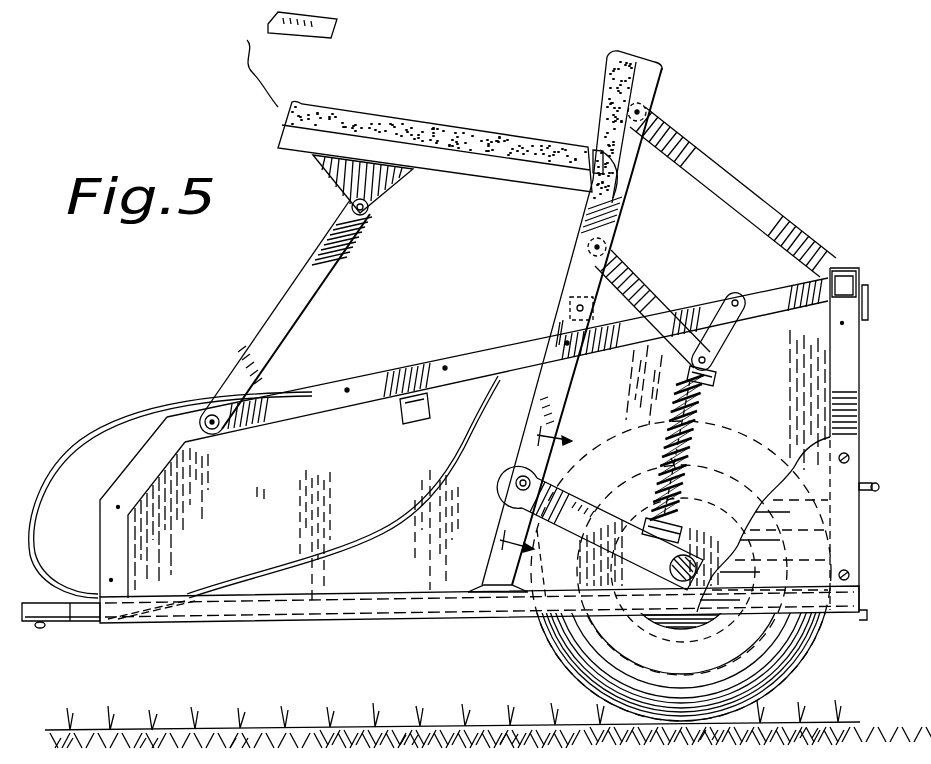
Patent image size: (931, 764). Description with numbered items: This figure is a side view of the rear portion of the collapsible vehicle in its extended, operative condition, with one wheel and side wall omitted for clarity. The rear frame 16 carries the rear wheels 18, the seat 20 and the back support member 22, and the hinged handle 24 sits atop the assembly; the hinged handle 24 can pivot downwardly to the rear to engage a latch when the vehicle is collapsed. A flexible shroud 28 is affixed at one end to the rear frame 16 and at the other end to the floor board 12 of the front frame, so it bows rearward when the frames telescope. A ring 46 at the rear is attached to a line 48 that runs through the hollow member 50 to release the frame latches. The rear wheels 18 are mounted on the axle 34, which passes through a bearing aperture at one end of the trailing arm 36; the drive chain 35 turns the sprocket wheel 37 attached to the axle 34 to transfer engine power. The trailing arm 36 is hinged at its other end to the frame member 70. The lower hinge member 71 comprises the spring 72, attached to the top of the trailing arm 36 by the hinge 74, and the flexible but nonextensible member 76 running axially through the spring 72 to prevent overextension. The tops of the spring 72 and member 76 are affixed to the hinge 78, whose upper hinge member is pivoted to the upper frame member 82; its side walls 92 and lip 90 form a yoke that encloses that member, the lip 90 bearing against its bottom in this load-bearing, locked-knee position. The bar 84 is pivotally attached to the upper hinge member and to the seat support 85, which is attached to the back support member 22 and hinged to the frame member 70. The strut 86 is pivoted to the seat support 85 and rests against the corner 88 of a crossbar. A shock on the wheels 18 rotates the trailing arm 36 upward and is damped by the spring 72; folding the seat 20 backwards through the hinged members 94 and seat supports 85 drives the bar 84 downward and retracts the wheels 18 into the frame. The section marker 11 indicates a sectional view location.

The section line 11- 11 is at (518, 488).
The floor board 12 is at (70, 623).
The rear frame 16 is at (370, 626).
The rear wheels 18 is at (802, 664).
The seat 20 is at (450, 130).
The back support member 22 is at (630, 60).
The hinged handle 24 is at (338, 26).
The shroud 28 is at (100, 413).
The axle 34 is at (712, 567).
The drive chain 35 is at (530, 541).
The trailing arm 36 is at (586, 503).
The sprocket wheel 37 is at (732, 669).
The ring 46 is at (868, 308).
The line 48 is at (378, 536).
The hollow member 50 is at (546, 334).
The frame member 70 is at (562, 387).
The lower hinge member 71 is at (668, 463).
The spring 72 is at (692, 453).
The hinge 74 is at (696, 508).
The flexible but nonextensible member 76 is at (700, 432).
The hinge 78 is at (705, 391).
The upper frame member 82 is at (780, 293).
The bar 84 is at (628, 293).
The seat support 85 is at (666, 96).
The strut 86 is at (764, 190).
The corner 88 is at (834, 268).
The lip 90 is at (738, 342).
The side walls 92 is at (630, 200).
The hinged members 94 is at (278, 312).